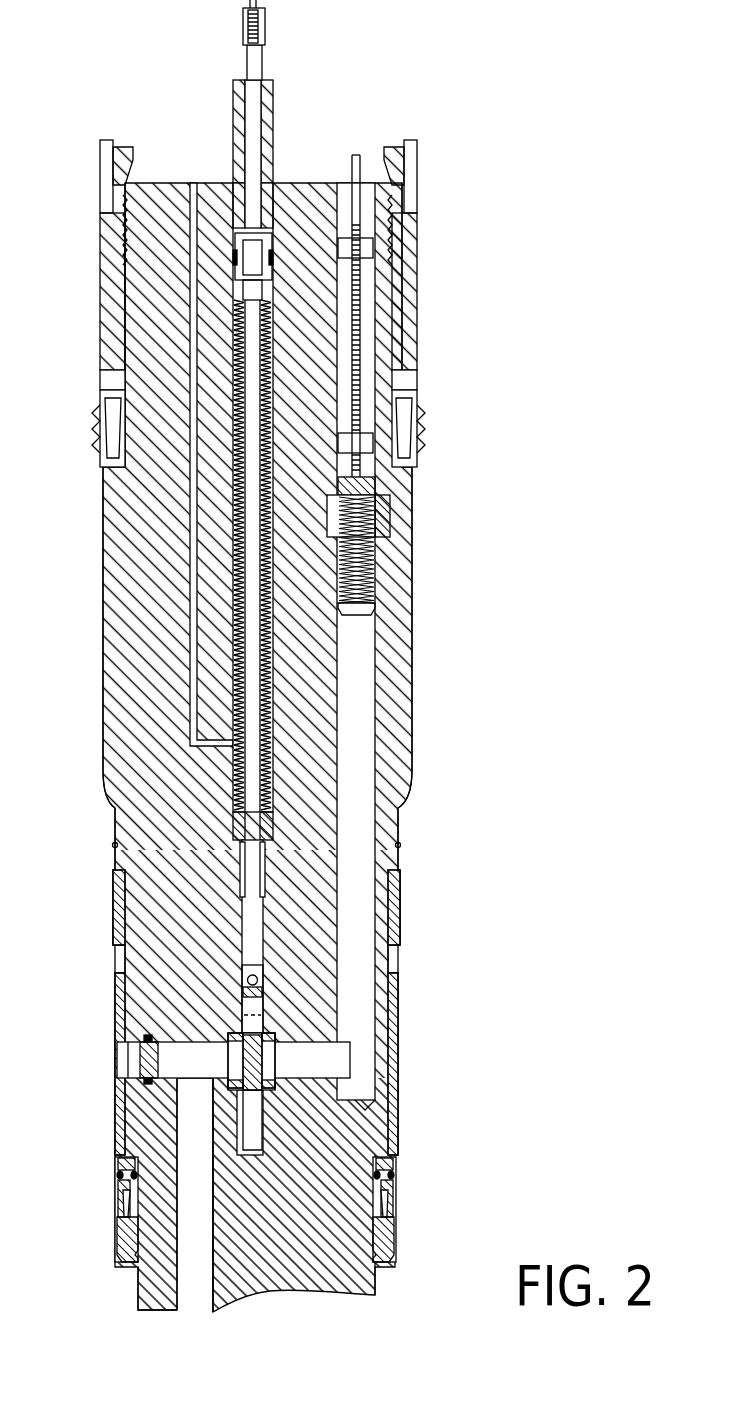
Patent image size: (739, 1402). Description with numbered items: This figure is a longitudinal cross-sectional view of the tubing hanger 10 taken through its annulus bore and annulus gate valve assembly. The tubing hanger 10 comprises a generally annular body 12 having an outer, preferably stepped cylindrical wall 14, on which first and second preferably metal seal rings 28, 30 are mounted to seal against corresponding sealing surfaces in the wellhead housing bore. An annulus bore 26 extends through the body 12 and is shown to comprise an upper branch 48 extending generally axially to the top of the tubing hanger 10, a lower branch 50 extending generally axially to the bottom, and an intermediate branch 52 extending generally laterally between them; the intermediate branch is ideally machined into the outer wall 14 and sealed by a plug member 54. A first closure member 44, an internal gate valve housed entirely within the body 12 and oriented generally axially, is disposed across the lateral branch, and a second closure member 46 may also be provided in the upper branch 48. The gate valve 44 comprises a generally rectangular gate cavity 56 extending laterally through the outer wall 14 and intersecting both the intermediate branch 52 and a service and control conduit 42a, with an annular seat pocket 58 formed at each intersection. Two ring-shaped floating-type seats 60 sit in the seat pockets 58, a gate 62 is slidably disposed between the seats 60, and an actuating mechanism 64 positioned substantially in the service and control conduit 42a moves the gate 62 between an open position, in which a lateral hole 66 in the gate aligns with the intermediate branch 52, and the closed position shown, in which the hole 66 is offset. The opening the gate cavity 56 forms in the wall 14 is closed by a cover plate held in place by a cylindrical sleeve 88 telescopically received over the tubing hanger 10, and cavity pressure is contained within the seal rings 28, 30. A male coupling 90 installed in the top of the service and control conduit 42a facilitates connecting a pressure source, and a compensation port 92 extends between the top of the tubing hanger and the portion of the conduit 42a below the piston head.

The tubing hanger 10 is at (413, 575).
The body 12 is at (377, 1277).
The outer wall 14 is at (228, 505).
The annulus bore 26 is at (380, 792).
The first seal ring 28 is at (397, 1163).
The second seal ring 30 is at (393, 892).
The service and control conduit 42a is at (235, 563).
The first closure member 44 is at (278, 1175).
The second closure member 46 is at (383, 475).
The upper branch 48 is at (363, 690).
The lower branch 50 is at (205, 1295).
The intermediate branch 52 is at (350, 1056).
The plug member 54 is at (133, 1058).
The gate cavity 56 is at (242, 1152).
The seat pocket 58 is at (232, 1033).
The floating-type seats 60 is at (232, 1082).
The gate 62 is at (263, 1060).
The actuating mechanism 64 is at (230, 810).
The lateral hole 66 is at (258, 990).
The cylindrical sleeve 88 is at (398, 1010).
The male coupling 90 is at (263, 50).
The compensation port 92 is at (190, 503).